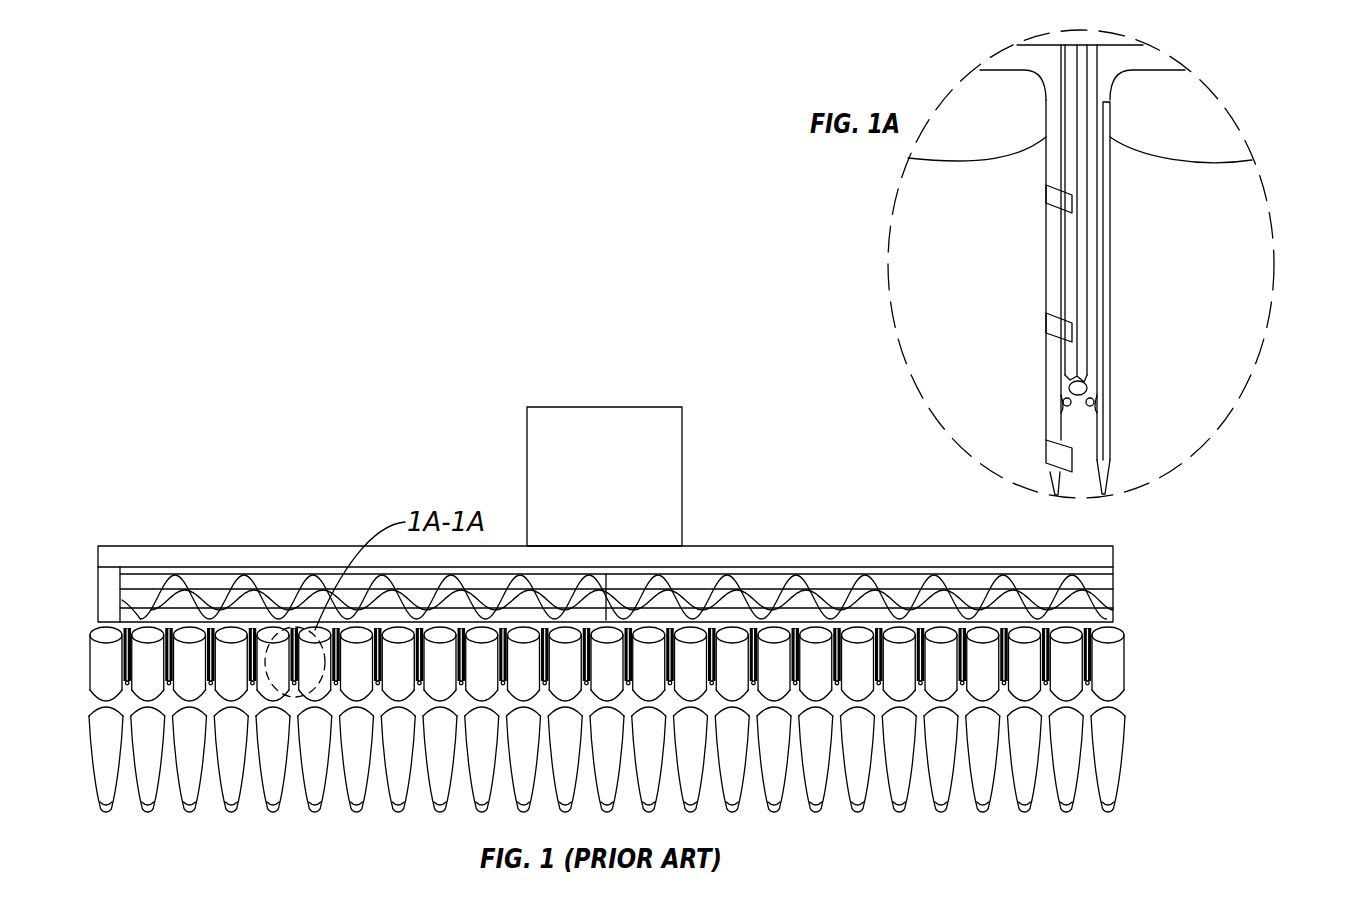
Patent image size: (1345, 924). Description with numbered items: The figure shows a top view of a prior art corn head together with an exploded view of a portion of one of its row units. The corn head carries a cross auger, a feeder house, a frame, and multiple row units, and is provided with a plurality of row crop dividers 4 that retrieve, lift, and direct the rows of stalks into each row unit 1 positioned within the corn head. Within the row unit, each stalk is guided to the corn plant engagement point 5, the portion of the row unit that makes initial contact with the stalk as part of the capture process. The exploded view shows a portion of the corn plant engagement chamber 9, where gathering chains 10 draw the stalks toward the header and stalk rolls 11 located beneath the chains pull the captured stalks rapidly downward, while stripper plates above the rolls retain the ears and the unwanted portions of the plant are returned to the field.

In FIG. 1A, the clip / retaining element 1 is at (1060, 328).
In FIG. 1, the pipette tip 4 is at (1108, 757).
In FIG. 1A, the pipette tip 4 is at (947, 222).
In FIG. 1A, the fitting / nozzle 5 is at (1067, 382).
In FIG. 1, the support bar 9 is at (140, 588).
In FIG. 1, the helical screw 10 is at (162, 580).
In FIG. 1, the drive block 11 is at (682, 475).